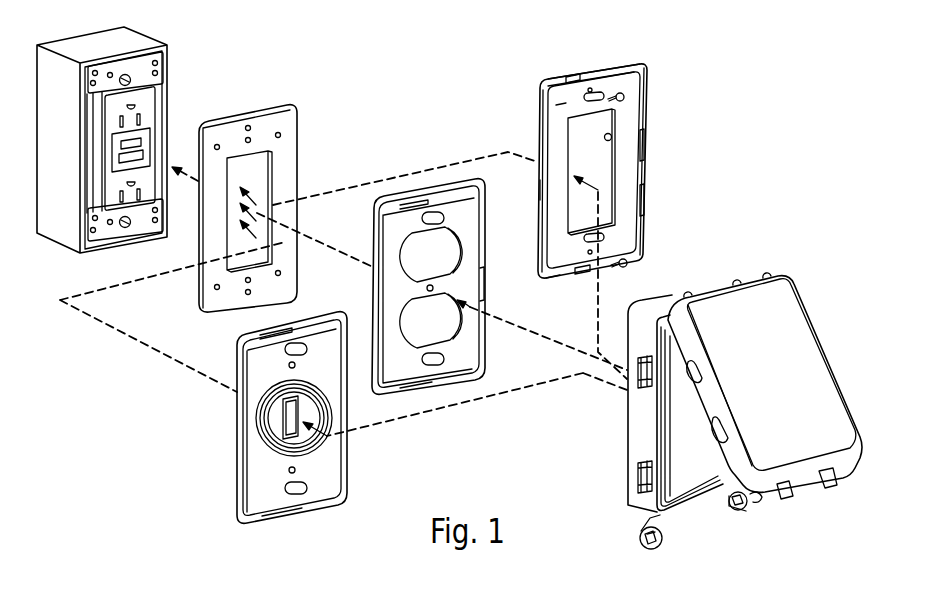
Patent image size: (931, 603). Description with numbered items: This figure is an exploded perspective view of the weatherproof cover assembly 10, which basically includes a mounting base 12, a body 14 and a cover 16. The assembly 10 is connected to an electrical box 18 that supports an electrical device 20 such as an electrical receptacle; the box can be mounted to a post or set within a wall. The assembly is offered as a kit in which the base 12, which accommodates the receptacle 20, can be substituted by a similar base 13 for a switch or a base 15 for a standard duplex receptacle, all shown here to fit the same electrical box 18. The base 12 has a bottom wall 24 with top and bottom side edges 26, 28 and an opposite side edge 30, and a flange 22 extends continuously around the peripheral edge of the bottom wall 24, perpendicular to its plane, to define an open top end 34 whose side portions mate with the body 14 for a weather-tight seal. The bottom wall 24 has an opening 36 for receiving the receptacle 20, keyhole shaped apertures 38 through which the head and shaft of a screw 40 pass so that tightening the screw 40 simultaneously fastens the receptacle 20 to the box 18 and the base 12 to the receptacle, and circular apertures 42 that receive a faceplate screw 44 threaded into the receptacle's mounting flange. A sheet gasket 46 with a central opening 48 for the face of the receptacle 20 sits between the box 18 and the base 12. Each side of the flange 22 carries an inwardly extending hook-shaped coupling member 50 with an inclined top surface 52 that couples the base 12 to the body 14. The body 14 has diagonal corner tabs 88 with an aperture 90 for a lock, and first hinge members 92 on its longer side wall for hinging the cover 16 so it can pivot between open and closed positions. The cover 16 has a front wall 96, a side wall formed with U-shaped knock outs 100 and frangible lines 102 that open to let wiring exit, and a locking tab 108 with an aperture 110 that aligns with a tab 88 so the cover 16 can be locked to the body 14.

The cover assembly 10 is at (724, 88).
The mounting base 12 is at (650, 102).
The base 13 is at (232, 416).
The body 14 is at (668, 296).
The base 15 is at (370, 292).
The cover 16 is at (786, 272).
The electrical box 18 is at (170, 44).
The electrical device 20 is at (160, 97).
The flange 22 is at (556, 79).
The bottom wall 24 is at (568, 112).
The top side edge 26 is at (587, 68).
The bottom side edge 28 is at (545, 276).
The side edge 30 is at (538, 190).
The open top end 34 is at (553, 150).
The opening 36 is at (612, 137).
The keyhole shaped aperture 38 is at (603, 96).
The screw 40 is at (127, 75).
The circular aperture 42 is at (592, 86).
The faceplate screw 44 is at (626, 95).
The gasket 46 is at (269, 102).
The central opening 48 is at (268, 178).
The hook-shaped coupling member 50 is at (565, 85).
The inclined top surface 52 is at (648, 168).
The tab 88 is at (663, 539).
The aperture 90 is at (647, 538).
The first hinge members 92 is at (636, 462).
The front wall 96 is at (790, 328).
The U-shaped knock outs 100 is at (793, 498).
The frangible lines 102 is at (833, 488).
The locking tab 108 is at (757, 504).
The aperture 110 is at (741, 510).